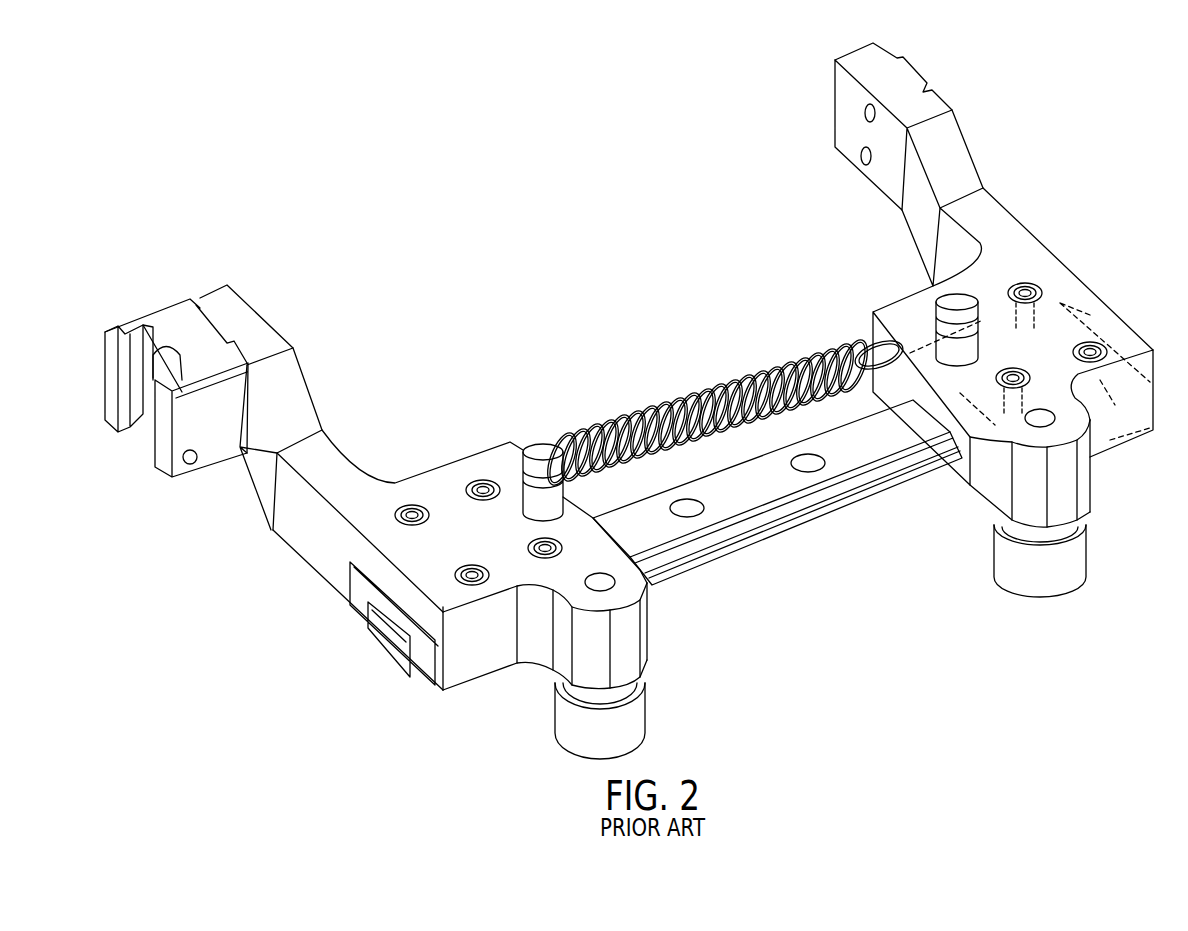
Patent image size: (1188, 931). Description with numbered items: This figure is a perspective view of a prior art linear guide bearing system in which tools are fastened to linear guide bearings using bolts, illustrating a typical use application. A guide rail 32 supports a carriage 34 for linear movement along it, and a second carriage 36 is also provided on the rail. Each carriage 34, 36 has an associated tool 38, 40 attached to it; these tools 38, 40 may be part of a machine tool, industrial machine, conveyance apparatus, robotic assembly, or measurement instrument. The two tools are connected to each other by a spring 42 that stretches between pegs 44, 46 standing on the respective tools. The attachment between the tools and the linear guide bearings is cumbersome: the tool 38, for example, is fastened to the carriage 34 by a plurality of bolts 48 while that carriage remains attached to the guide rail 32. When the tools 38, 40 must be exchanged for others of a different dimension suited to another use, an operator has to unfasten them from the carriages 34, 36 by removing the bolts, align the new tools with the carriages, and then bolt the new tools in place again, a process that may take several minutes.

The guide rail 32 is at (780, 513).
The carriage 34 is at (1137, 432).
The second carriage 36 is at (497, 613).
The tool 38 is at (950, 142).
The tool 40 is at (307, 545).
The spring 42 is at (701, 393).
The peg 44 is at (947, 302).
The peg 46 is at (543, 453).
The bolts 48 is at (1023, 290).